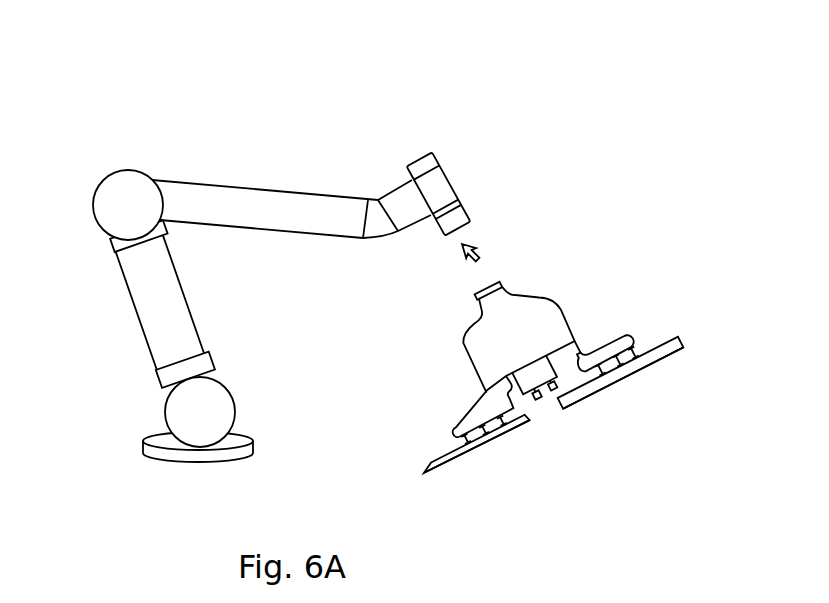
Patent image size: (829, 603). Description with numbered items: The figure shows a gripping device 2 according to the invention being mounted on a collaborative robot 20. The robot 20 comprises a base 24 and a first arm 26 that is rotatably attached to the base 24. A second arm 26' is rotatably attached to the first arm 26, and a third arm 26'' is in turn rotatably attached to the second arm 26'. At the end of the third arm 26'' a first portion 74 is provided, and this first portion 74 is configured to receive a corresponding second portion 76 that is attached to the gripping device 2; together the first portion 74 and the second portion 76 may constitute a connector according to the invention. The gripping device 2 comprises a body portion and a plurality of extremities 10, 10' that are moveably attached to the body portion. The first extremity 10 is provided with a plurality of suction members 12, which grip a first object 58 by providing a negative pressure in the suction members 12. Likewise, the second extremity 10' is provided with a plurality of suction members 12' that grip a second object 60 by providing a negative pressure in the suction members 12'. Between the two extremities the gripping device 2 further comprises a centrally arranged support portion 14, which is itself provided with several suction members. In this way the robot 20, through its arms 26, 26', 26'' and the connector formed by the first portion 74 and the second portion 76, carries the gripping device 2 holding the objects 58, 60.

The collaborative robot 20 is at (186, 104).
The base 24 is at (243, 438).
The first arm 26 is at (121, 304).
The second arm 26' is at (265, 162).
The third arm 26'' is at (387, 168).
The first portion 74 is at (472, 212).
The second portion 76 is at (501, 286).
The gripping device 2 is at (608, 270).
The first extremity 10 is at (438, 396).
The second extremity 10' is at (633, 316).
The suction members 12 is at (431, 444).
The suction members 12' is at (647, 346).
The support portion 14 is at (528, 408).
The first object 58 is at (479, 446).
The second object 60 is at (633, 372).